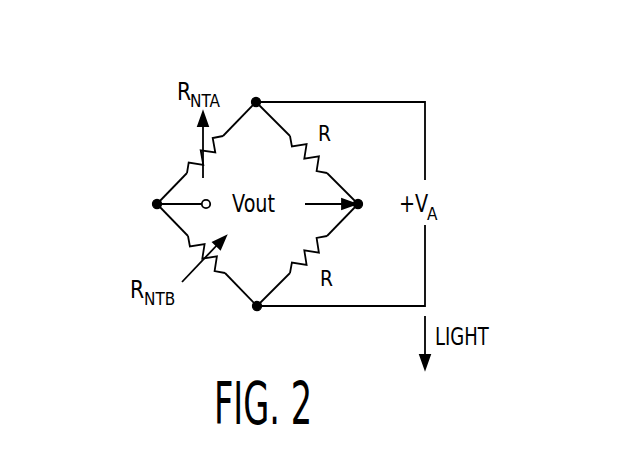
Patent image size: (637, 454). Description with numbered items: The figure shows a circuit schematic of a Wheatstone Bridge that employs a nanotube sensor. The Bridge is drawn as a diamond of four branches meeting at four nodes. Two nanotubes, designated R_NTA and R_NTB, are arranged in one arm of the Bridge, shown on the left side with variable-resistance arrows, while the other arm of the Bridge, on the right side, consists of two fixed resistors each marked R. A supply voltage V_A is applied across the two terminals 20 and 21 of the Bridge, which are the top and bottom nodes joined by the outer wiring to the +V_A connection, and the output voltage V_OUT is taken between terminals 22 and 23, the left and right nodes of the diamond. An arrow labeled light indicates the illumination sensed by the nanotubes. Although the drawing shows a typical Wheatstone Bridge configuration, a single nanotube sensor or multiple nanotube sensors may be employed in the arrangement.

The terminal 20 is at (256, 98).
The terminal 21 is at (254, 311).
The terminal 22 is at (153, 205).
The terminal 23 is at (360, 199).